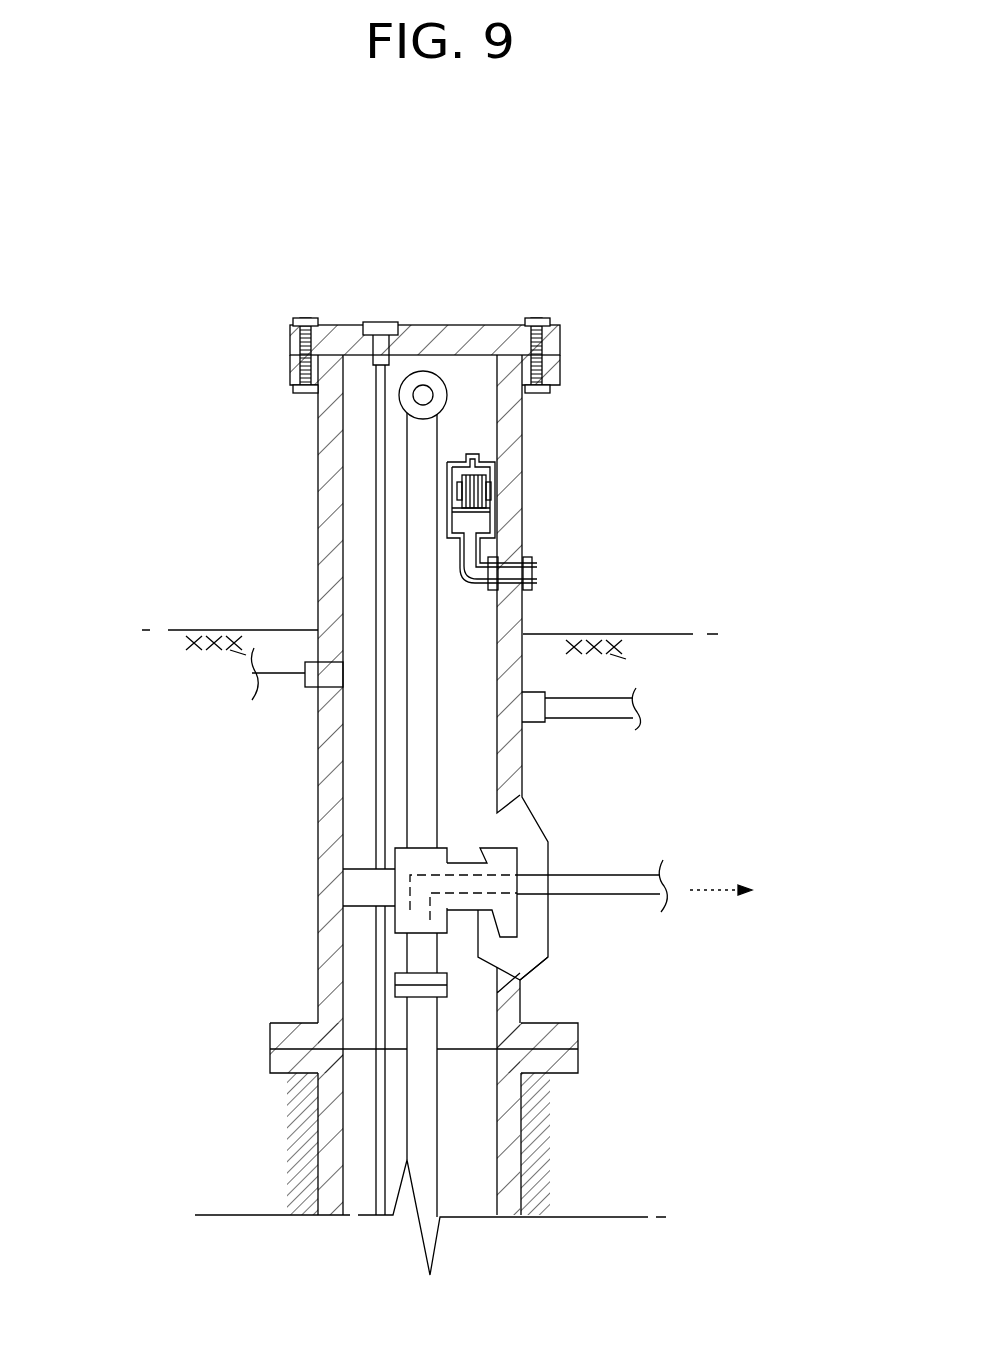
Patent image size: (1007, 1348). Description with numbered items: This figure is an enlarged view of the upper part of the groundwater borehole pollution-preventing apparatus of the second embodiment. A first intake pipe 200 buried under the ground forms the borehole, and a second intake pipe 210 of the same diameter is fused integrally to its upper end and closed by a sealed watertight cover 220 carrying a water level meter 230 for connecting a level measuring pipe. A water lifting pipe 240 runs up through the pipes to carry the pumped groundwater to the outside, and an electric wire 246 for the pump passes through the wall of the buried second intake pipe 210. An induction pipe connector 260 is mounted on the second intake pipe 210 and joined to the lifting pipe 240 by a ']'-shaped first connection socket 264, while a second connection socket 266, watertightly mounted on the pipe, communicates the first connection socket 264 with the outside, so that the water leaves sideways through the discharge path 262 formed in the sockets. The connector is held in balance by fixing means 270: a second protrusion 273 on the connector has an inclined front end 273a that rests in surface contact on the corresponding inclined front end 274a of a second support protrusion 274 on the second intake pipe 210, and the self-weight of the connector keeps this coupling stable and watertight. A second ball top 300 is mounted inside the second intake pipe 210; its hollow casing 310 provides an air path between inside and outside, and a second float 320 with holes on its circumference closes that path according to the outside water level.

The first intake pipe 200 is at (515, 1118).
The second intake pipe 210 is at (330, 548).
The watertight cover 220 is at (492, 328).
The water level meter 230 is at (384, 322).
The water lifting pipe 240 is at (417, 1008).
The electric wire 246 is at (280, 676).
The induction pipe connector 260 is at (618, 925).
The discharge path 262 is at (660, 886).
The first connection socket 264 is at (508, 918).
The second connection socket 266 is at (535, 960).
The fixing means 270 is at (286, 881).
The second protrusion 273 is at (365, 869).
The inclined front end 273a is at (362, 905).
The second support protrusion 274 is at (343, 905).
The inclined front end 274a is at (362, 868).
The second ball top 300 is at (585, 515).
The hollow casing 310 is at (499, 538).
The second float 320 is at (498, 495).